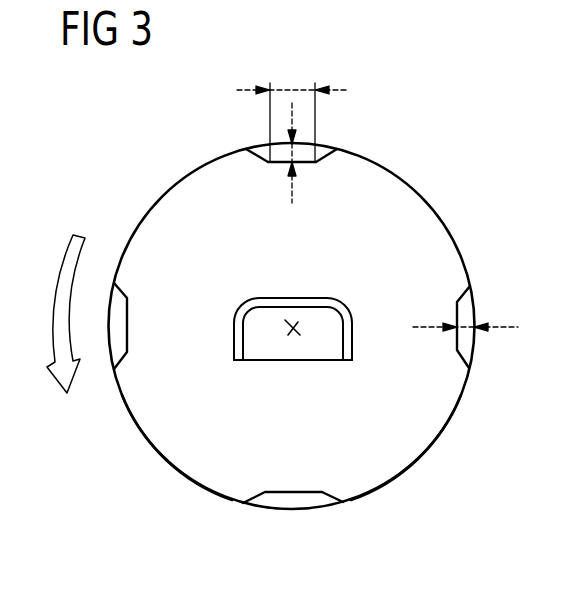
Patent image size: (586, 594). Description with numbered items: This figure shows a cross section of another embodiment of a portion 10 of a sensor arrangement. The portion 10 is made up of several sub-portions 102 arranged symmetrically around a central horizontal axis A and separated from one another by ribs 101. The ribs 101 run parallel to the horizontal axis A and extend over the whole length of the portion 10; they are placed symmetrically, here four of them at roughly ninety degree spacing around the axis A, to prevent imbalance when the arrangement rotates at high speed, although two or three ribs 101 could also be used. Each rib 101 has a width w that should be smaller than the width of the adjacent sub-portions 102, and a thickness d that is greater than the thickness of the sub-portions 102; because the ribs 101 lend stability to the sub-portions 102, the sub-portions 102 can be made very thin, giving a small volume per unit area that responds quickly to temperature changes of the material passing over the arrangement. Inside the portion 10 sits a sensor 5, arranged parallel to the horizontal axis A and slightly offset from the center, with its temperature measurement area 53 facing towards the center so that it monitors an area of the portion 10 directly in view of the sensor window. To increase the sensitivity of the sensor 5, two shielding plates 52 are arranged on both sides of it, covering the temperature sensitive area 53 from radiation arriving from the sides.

The portion 10 is at (430, 193).
The ribs 101 is at (117, 333).
The sub-portions 102 is at (168, 467).
The sensor 5 is at (293, 297).
The shielding plates 52 is at (238, 325).
The temperature measurement area 53 is at (280, 308).
The horizontal axis A is at (296, 332).
The thickness of ribs d is at (298, 156).
The width of ribs w is at (292, 109).